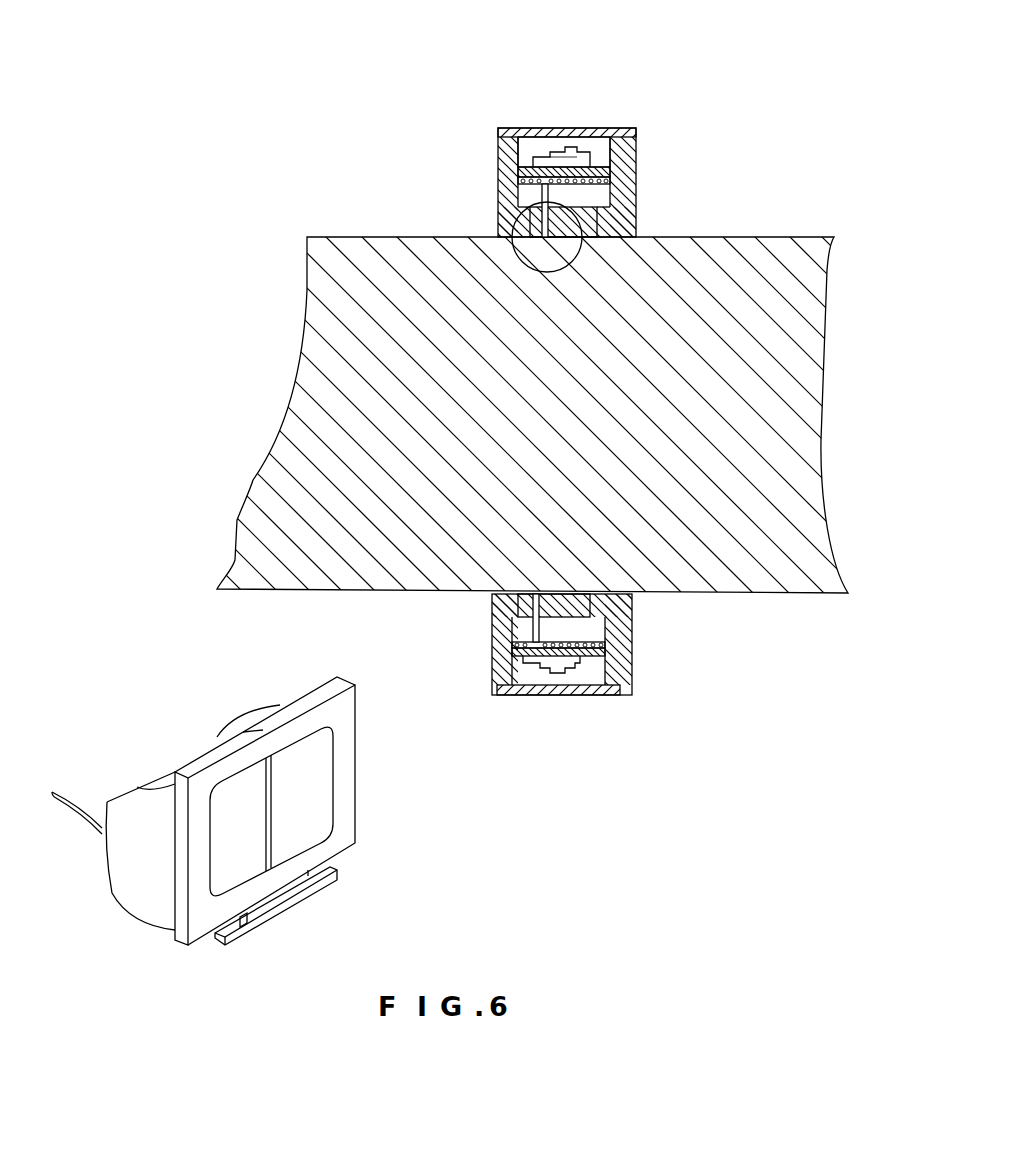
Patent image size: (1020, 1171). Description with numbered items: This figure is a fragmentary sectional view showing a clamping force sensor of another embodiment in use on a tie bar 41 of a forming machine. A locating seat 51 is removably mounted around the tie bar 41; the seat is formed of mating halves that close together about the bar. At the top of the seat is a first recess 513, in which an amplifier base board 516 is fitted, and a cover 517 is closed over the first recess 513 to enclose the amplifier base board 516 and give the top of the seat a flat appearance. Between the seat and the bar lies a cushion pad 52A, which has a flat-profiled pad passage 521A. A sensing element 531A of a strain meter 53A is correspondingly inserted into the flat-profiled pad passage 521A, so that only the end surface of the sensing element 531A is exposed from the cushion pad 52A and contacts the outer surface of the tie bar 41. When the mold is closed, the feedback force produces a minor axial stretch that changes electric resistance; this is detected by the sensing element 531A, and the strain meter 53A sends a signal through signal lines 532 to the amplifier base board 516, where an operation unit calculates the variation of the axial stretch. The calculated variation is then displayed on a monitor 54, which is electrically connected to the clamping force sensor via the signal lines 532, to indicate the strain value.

The tie bar 41 is at (792, 237).
The locating seat 51 is at (648, 200).
The first recess 513 is at (593, 148).
The amplifier base board 516 is at (555, 147).
The cover 517 is at (530, 132).
The flat-profiled pad passage 521A is at (537, 205).
The cushion pad 52A is at (537, 222).
The sensing element 531A is at (597, 222).
The strain meter 53A is at (637, 167).
The monitor 54 is at (215, 743).
The signal lines 532 is at (62, 797).